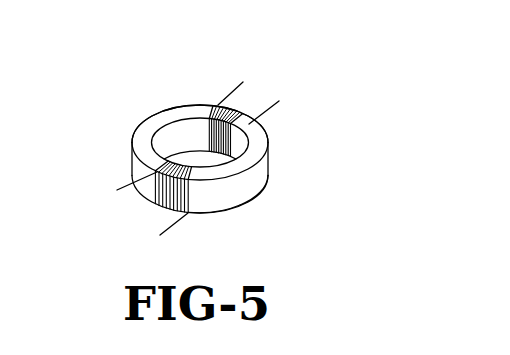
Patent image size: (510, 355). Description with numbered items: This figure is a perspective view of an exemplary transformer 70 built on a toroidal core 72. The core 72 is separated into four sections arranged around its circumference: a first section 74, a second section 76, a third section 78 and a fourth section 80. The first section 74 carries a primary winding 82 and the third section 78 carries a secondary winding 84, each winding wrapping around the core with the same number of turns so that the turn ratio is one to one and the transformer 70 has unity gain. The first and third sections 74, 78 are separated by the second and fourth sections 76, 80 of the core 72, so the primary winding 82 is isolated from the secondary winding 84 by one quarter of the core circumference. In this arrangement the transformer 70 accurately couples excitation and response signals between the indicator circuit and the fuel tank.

The transformer 70 is at (130, 97).
The toroidal core 72 is at (213, 205).
The first section 74 is at (123, 155).
The second section 76 is at (268, 200).
The third section 78 is at (252, 97).
The fourth section 80 is at (177, 98).
The primary winding 82 is at (168, 200).
The secondary winding 84 is at (218, 105).